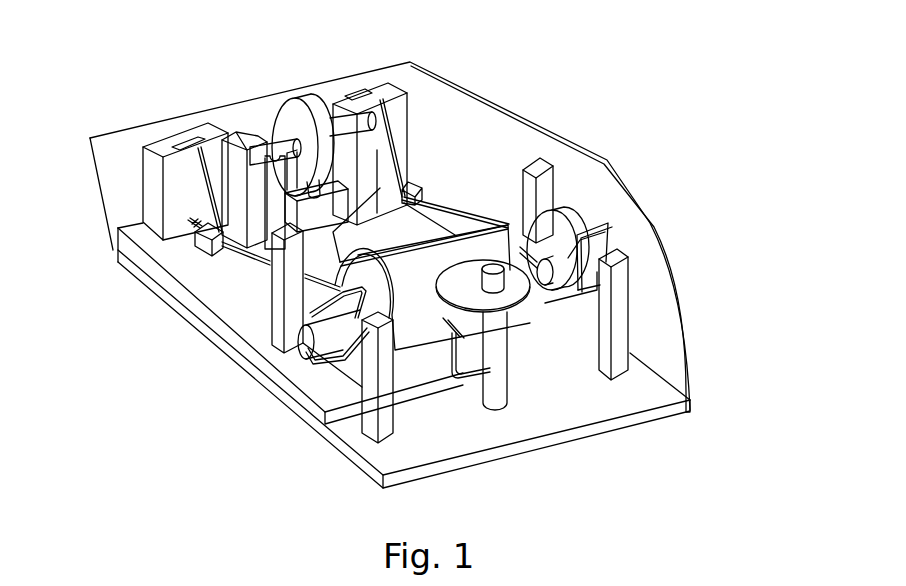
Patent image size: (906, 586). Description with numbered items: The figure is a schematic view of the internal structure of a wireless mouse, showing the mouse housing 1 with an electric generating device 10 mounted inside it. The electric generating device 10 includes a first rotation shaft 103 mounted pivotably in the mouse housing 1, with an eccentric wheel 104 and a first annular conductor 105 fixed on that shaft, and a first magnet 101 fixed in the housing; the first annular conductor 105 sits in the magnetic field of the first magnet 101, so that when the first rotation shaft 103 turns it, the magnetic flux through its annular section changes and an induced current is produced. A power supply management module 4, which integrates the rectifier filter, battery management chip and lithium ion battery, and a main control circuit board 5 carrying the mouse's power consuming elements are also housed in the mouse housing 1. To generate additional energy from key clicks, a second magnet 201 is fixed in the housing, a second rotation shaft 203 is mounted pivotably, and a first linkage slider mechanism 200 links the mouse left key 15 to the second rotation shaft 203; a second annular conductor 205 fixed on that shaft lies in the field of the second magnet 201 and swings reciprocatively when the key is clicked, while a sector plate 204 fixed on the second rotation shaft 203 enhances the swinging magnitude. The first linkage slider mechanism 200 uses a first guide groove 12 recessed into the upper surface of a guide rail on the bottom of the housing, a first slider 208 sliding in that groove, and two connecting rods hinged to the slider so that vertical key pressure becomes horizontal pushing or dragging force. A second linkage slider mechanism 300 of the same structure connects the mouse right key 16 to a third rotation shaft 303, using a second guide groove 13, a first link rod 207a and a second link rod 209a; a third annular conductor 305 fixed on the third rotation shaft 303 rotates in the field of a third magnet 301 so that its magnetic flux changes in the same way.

The mouse housing 1 is at (105, 148).
The electric generating device 10 is at (538, 329).
The first guide groove 12 is at (280, 258).
The second guide groove 13 is at (482, 250).
The mouse left key 15 is at (190, 135).
The mouse right key 16 is at (355, 98).
The power supply management module 4 is at (543, 193).
The main control circuit board 5 is at (368, 242).
The first magnet 101 is at (617, 290).
The first rotation shaft 103 is at (496, 400).
The eccentric wheel 104 is at (512, 300).
The first annular conductor 105 is at (463, 375).
The first linkage slider mechanism 200 is at (216, 170).
The second magnet 201 is at (357, 275).
The second rotation shaft 203 is at (330, 333).
The sector plate 204 is at (358, 290).
The second annular conductor 205 is at (313, 358).
The first link rod 207a is at (397, 180).
The first slider 208 is at (212, 237).
The second link rod 209a is at (412, 205).
The second linkage slider mechanism 300 is at (396, 142).
The third magnet 301 is at (590, 224).
The third rotation shaft 303 is at (620, 250).
The third annular conductor 305 is at (600, 243).